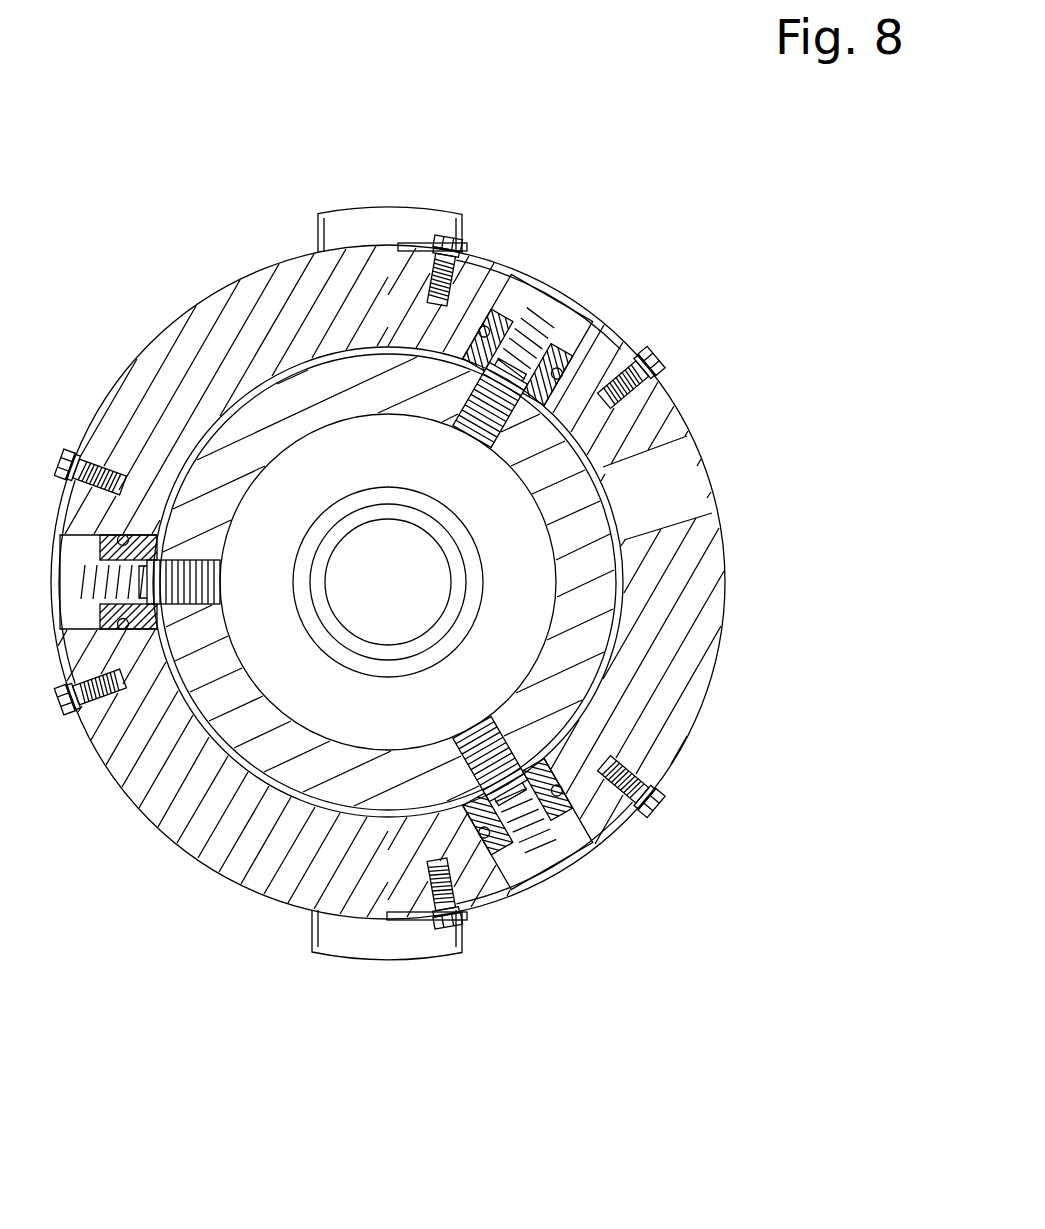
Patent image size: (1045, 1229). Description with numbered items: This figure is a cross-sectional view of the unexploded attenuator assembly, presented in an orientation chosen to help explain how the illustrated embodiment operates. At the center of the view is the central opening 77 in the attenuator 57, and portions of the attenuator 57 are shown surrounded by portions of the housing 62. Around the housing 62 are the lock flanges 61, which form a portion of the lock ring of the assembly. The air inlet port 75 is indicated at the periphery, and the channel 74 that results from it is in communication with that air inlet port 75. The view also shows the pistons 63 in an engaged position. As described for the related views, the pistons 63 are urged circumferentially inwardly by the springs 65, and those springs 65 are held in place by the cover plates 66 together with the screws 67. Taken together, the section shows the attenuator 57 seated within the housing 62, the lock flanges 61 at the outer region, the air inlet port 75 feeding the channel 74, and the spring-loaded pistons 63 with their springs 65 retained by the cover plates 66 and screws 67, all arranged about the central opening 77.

The attenuator 57 is at (563, 647).
The lock flanges 61 is at (388, 215).
The housing 62 is at (187, 333).
The pistons 63 is at (470, 745).
The springs 65 is at (523, 847).
The cover plates 66 is at (603, 843).
The screws 67 is at (663, 798).
The channel 74 is at (623, 588).
The air inlet port 75 is at (738, 456).
The central opening 77 is at (401, 500).